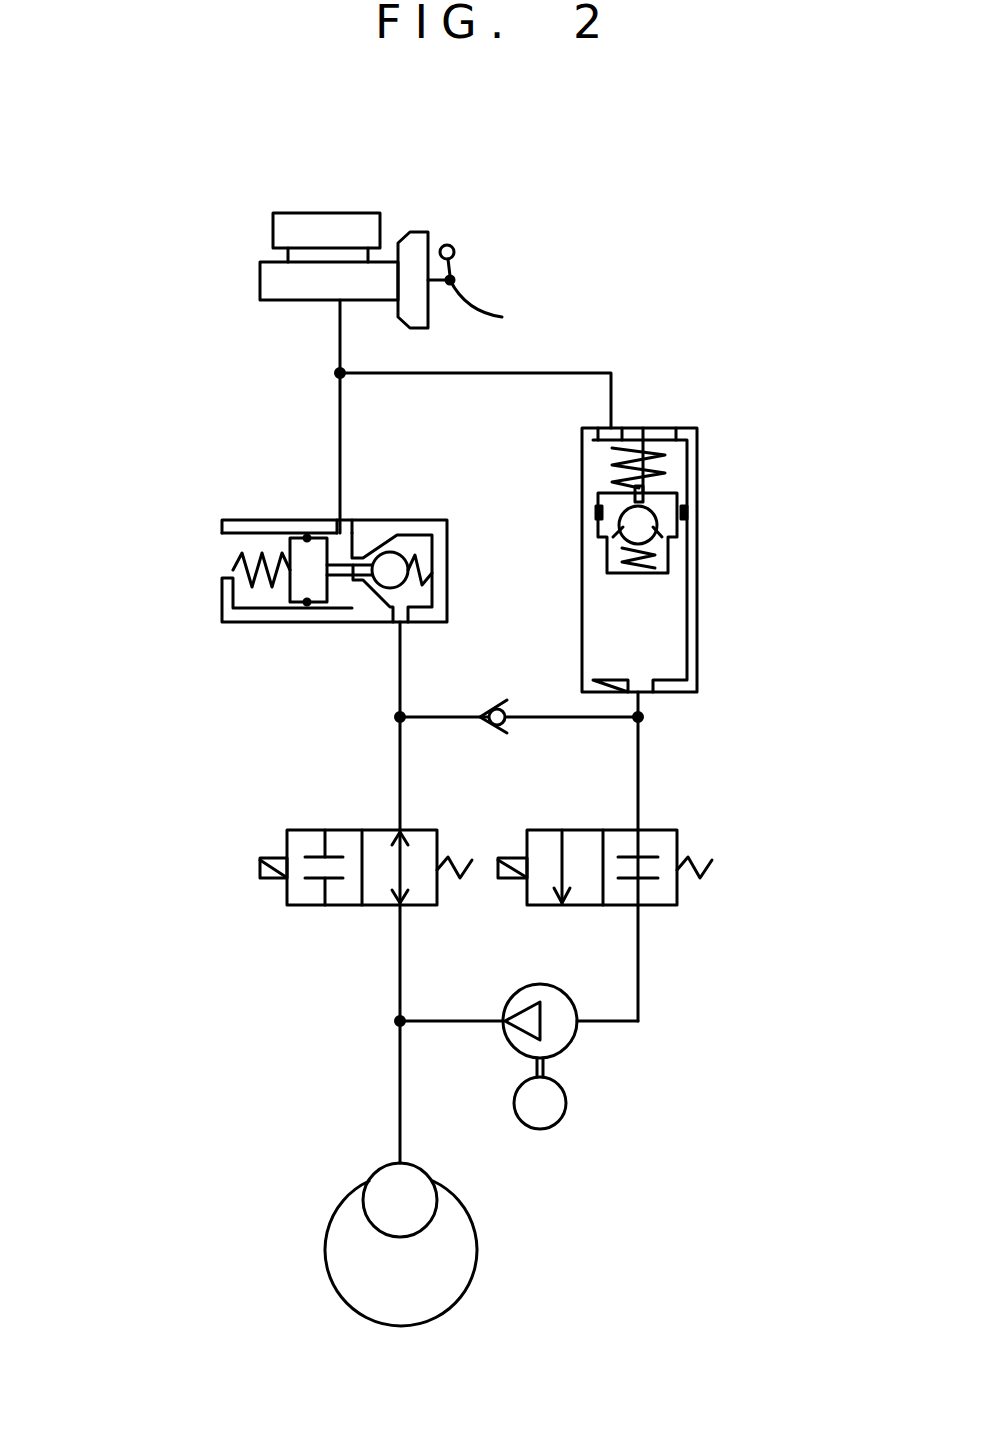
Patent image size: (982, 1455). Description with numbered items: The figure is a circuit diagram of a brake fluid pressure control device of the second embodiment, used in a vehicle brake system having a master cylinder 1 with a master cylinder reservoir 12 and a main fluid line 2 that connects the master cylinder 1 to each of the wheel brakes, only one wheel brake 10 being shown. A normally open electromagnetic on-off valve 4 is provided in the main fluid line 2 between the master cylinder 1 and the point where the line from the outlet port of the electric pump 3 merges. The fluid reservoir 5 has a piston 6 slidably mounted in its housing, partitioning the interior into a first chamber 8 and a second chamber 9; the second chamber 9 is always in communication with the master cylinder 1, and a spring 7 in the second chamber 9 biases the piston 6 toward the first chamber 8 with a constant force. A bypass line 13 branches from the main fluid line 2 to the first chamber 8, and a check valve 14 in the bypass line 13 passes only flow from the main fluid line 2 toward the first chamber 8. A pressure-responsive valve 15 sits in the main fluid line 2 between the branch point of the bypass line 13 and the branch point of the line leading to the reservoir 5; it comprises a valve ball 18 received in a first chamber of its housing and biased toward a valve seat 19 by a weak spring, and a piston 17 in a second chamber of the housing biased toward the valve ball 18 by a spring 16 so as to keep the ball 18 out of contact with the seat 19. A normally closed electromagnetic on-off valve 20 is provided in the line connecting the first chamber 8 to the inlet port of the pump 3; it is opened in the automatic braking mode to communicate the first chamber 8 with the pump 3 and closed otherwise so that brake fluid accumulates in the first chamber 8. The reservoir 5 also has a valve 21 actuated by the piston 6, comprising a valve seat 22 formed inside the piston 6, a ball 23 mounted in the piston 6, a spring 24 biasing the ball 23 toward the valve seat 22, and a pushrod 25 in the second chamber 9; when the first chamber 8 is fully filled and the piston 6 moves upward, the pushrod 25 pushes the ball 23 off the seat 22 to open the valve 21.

The master cylinder 1 is at (273, 283).
The master cylinder reservoir 12 is at (330, 220).
The main fluid line 2 is at (340, 410).
The electric pump 3 is at (558, 1038).
The normally open electromagnetic on-off valve 4 is at (308, 828).
The fluid reservoir 5 is at (727, 461).
The piston 6 is at (597, 505).
The spring 7 is at (658, 447).
The first chamber 8 is at (668, 632).
The second chamber 9 is at (675, 448).
The wheel brake 10 is at (412, 1187).
The bypass line 13 is at (447, 715).
The check valve 14 is at (492, 727).
The pressure-responsive valve 15 is at (203, 608).
The spring 16 is at (242, 562).
The piston 17 is at (300, 548).
The valve ball 18 is at (388, 565).
The valve seat 19 is at (378, 545).
The normally closed electromagnetic on-off valve 20 is at (660, 840).
The valve 21 is at (672, 532).
The valve seat 22 is at (660, 508).
The ball 23 is at (623, 532).
The spring 24 is at (577, 602).
The pushrod 25 is at (637, 497).